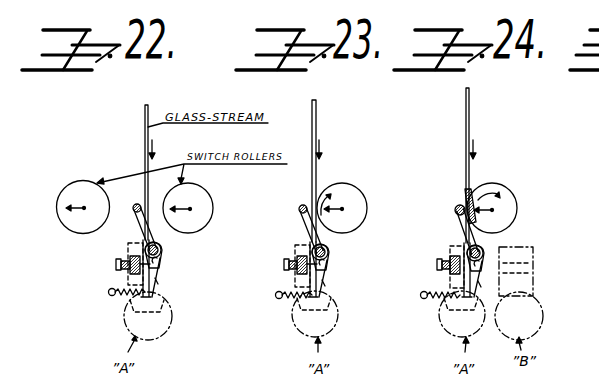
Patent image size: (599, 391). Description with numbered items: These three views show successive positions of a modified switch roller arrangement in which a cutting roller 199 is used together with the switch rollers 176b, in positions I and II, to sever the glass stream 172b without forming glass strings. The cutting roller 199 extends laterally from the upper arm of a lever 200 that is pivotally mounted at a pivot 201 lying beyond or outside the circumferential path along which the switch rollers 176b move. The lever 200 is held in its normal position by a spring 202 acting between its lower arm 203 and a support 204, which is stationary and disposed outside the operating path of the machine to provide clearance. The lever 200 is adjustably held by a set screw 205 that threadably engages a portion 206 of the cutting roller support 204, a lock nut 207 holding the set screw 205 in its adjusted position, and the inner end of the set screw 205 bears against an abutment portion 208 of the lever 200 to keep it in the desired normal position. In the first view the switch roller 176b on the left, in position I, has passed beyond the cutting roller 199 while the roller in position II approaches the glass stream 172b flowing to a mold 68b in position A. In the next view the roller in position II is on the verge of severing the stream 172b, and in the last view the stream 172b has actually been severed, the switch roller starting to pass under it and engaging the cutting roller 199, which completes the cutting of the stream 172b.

In FIG. 22, the glass stream 172b is at (143, 118).
In FIG. 23, the glass stream 172b is at (317, 121).
In FIG. 24, the glass stream 172b is at (471, 123).
In FIG. 22, the switch roller 176b is at (231, 193).
In FIG. 23, the switch roller 176b is at (359, 193).
In FIG. 24, the switch roller 176b is at (511, 200).
In FIG. 22, the cutting roller 199 is at (135, 206).
In FIG. 23, the cutting roller 199 is at (301, 210).
In FIG. 24, the cutting roller 199 is at (455, 209).
In FIG. 22, the lever 200 is at (166, 240).
In FIG. 23, the lever 200 is at (330, 240).
In FIG. 24, the lever 200 is at (464, 243).
In FIG. 22, the pivot 201 is at (160, 262).
In FIG. 23, the pivot 201 is at (328, 260).
In FIG. 24, the pivot 201 is at (486, 250).
In FIG. 22, the spring 202 is at (126, 304).
In FIG. 23, the spring 202 is at (296, 300).
In FIG. 24, the spring 202 is at (447, 308).
In FIG. 22, the lower arm 203 is at (158, 282).
In FIG. 23, the lower arm 203 is at (330, 292).
In FIG. 24, the lower arm 203 is at (484, 284).
In FIG. 22, the support 204 is at (108, 293).
In FIG. 23, the support 204 is at (328, 314).
In FIG. 24, the support 204 is at (430, 301).
In FIG. 22, the set screw 205 is at (116, 264).
In FIG. 23, the set screw 205 is at (285, 264).
In FIG. 24, the set screw 205 is at (437, 264).
In FIG. 22, the portion of cutting roller support 206 is at (128, 284).
In FIG. 23, the portion of cutting roller support 206 is at (297, 284).
In FIG. 24, the portion of cutting roller support 206 is at (450, 284).
In FIG. 22, the lock nut 207 is at (128, 258).
In FIG. 23, the lock nut 207 is at (296, 251).
In FIG. 24, the lock nut 207 is at (452, 250).
In FIG. 22, the abutment portion 208 is at (160, 270).
In FIG. 23, the abutment portion 208 is at (329, 274).
In FIG. 24, the abutment portion 208 is at (460, 264).
In FIG. 22, the mold 68b is at (154, 336).
In FIG. 23, the mold 68b is at (298, 340).
In FIG. 24, the mold 68b is at (556, 350).